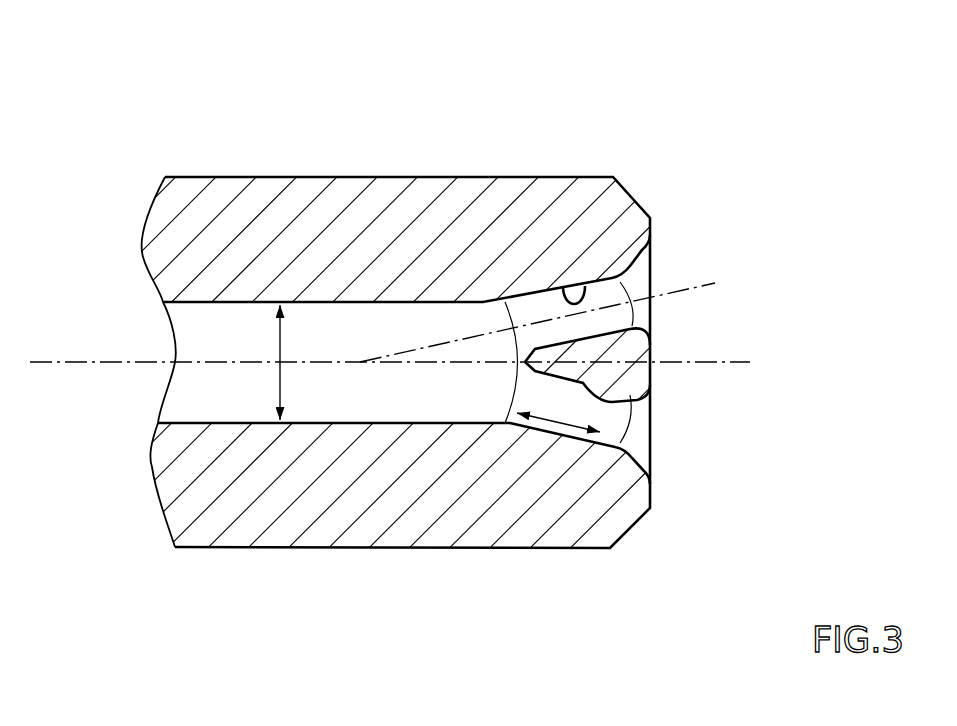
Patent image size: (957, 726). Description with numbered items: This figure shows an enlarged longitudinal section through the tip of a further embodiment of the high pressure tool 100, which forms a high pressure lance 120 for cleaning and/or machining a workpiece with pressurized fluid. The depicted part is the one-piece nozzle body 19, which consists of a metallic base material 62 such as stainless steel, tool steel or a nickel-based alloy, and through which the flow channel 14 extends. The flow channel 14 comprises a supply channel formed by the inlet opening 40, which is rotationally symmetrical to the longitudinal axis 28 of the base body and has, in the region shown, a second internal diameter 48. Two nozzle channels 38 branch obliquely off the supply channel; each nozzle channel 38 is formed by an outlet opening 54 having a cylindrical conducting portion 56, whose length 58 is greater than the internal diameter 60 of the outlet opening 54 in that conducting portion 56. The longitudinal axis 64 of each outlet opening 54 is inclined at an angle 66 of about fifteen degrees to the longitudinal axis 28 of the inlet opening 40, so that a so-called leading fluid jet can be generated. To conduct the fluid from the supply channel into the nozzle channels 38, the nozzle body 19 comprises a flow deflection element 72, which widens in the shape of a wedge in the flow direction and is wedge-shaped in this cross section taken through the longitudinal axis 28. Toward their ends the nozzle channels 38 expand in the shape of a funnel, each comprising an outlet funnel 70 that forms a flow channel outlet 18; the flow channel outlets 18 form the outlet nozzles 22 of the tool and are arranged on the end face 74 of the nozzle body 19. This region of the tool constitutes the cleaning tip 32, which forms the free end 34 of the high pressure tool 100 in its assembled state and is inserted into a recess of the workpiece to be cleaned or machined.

The high pressure tool 100 is at (686, 131).
The high pressure lance 120 is at (751, 157).
The nozzle body 19 is at (262, 165).
The flow channel 14 is at (225, 297).
The longitudinal axis 28 is at (82, 364).
The longitudinal axis of the outlet opening 64 is at (416, 335).
The second internal diameter 48 is at (278, 370).
The inlet opening 40 is at (185, 302).
The metallic base material 62 is at (257, 525).
The flow channel outlet 18 is at (651, 359).
The outlet nozzle 22 is at (668, 323).
The outlet opening 54 is at (541, 290).
The nozzle channel 38 is at (515, 300).
The internal diameter 60 is at (528, 308).
The angle 66 is at (500, 350).
The flow deflection element 72 is at (498, 376).
The conducting portion 56 is at (548, 425).
The length 58 is at (558, 375).
The outlet funnel 70 is at (641, 277).
The end face 74 is at (653, 231).
The cleaning tip 32 is at (695, 590).
The free end 34 is at (636, 548).